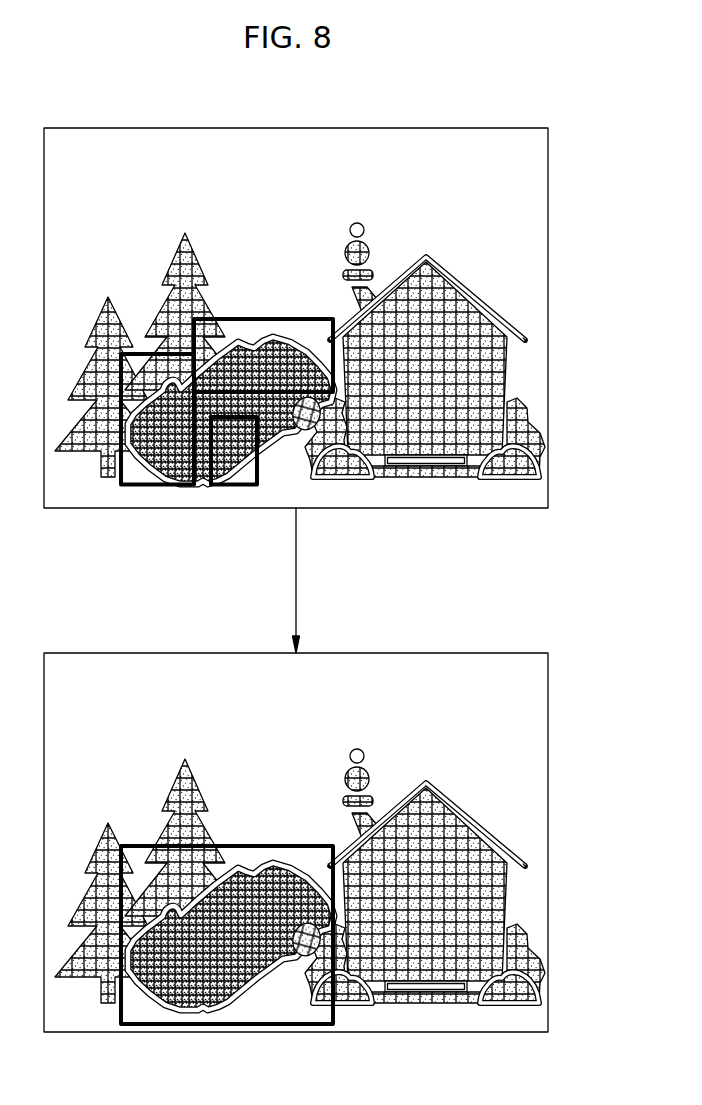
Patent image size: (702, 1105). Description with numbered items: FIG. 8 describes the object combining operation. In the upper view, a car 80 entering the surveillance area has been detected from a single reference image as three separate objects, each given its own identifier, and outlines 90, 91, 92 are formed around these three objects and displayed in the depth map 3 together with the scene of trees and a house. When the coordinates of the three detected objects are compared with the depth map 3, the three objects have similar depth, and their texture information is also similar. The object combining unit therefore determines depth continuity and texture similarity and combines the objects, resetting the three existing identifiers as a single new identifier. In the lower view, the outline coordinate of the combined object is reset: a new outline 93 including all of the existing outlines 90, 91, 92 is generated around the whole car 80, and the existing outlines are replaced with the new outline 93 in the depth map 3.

The depth map 3 is at (548, 273).
The car 80 is at (288, 342).
The outline 90 is at (160, 488).
The outline 91 is at (247, 318).
The outline 92 is at (233, 488).
The new outline 93 is at (244, 844).